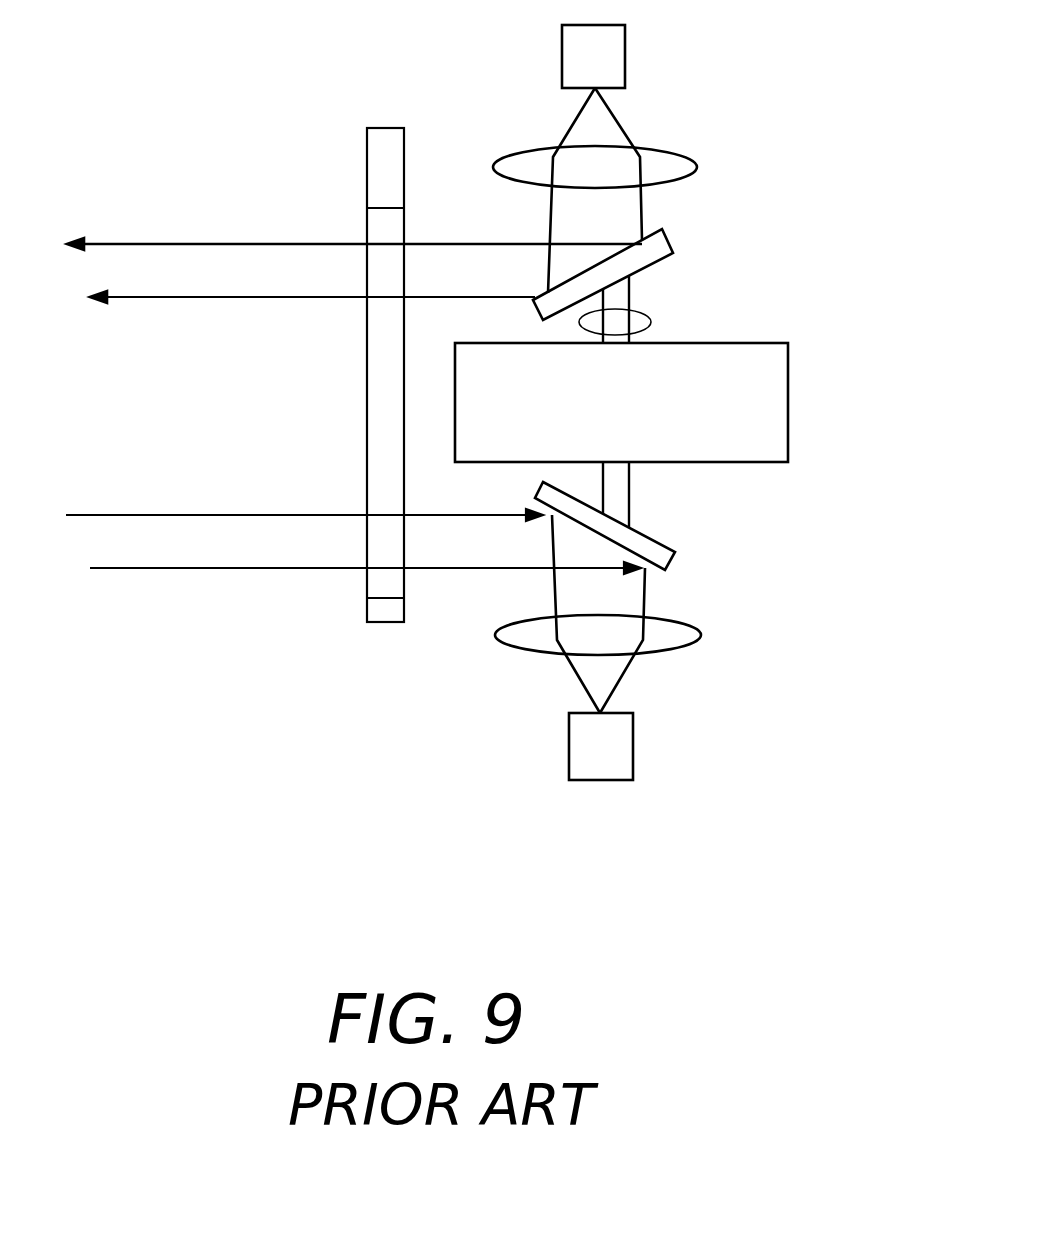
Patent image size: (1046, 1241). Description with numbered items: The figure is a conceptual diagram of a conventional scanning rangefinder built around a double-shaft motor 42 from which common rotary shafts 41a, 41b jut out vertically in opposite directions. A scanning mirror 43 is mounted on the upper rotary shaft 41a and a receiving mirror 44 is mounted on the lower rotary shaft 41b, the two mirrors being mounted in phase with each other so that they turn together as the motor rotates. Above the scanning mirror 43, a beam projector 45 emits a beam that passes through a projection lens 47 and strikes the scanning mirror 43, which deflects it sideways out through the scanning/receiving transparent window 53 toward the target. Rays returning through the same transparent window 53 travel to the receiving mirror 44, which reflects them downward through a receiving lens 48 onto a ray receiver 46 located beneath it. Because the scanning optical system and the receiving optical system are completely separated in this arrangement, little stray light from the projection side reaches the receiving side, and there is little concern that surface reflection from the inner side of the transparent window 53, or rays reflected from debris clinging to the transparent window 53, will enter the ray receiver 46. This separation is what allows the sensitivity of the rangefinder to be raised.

The beam projector 45 is at (630, 48).
The projection lens 47 is at (698, 150).
The scanning mirror 43 is at (672, 235).
The rotary shaft 41a is at (631, 295).
The double-shaft motor 42 is at (790, 400).
The rotary shaft 41b is at (631, 494).
The receiving mirror 44 is at (676, 560).
The receiving lens 48 is at (701, 620).
The ray receiver 46 is at (635, 745).
The scanning/receiving transparent window 53 is at (368, 585).